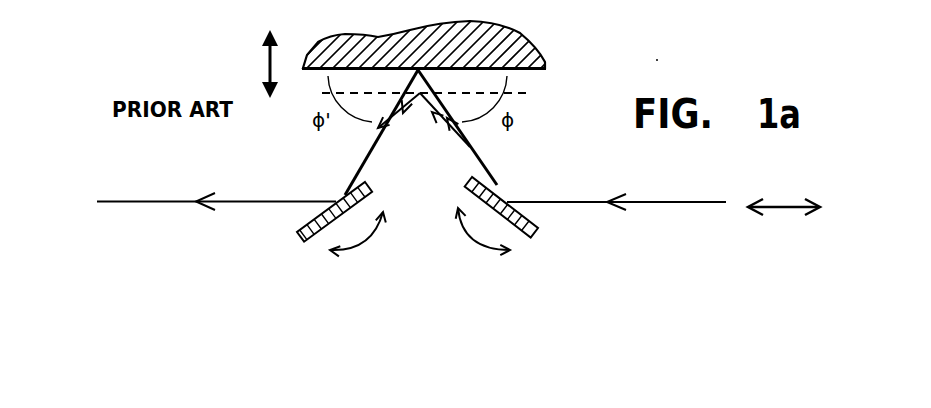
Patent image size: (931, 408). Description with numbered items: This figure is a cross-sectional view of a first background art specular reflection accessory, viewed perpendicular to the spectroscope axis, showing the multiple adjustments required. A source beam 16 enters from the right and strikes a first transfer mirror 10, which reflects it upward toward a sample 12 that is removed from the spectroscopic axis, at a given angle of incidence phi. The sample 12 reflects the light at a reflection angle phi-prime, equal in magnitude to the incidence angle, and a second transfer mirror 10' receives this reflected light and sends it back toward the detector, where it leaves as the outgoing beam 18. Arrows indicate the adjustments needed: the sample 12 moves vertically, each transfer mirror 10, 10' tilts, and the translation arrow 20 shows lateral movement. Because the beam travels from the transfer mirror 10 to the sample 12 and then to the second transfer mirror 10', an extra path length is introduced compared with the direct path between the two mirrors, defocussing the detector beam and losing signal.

The sample 12 is at (527, 42).
The first transfer mirror 10 is at (524, 216).
The second transfer mirror 10' is at (313, 219).
The source beam 16 is at (647, 200).
The outgoing light beam 18 is at (154, 197).
The translation direction arrow 20 is at (775, 214).